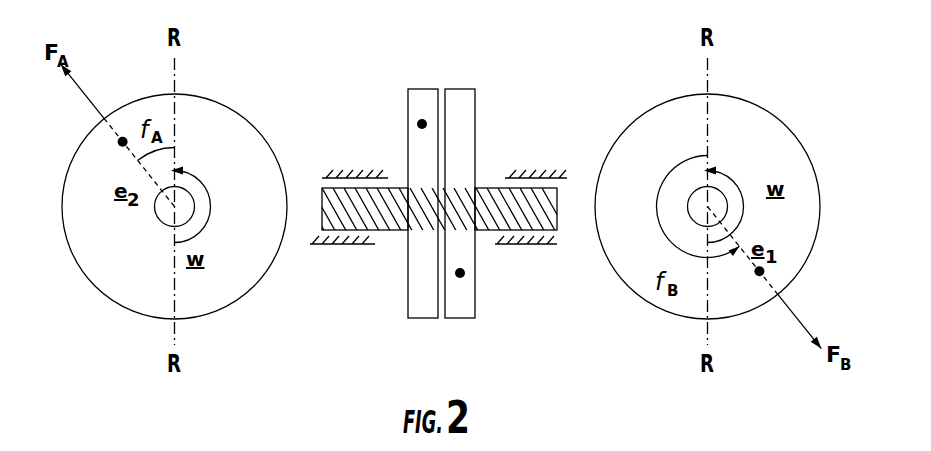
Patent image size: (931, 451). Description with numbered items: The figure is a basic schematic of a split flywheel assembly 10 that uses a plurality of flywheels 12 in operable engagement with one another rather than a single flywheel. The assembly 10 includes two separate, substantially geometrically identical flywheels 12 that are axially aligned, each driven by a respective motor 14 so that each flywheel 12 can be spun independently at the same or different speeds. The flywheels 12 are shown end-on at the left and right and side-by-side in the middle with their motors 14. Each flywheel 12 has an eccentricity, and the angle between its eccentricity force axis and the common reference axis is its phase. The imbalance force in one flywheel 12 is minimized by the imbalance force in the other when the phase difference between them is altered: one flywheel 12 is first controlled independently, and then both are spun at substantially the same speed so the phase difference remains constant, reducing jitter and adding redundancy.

The flywheel assembly 10 is at (513, 105).
The flywheel 12 is at (215, 126).
The motor 14 is at (388, 212).